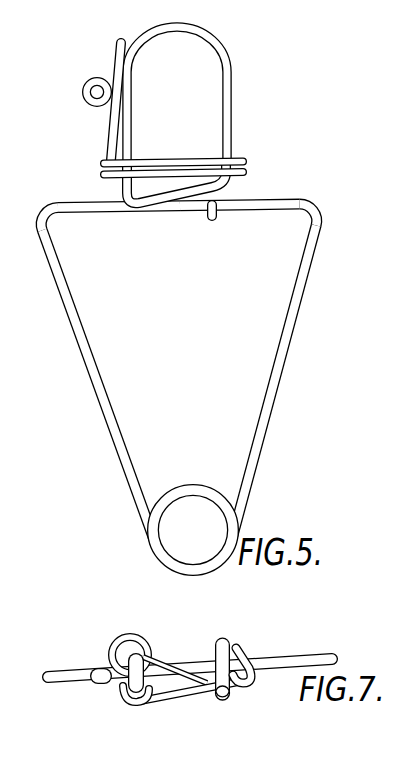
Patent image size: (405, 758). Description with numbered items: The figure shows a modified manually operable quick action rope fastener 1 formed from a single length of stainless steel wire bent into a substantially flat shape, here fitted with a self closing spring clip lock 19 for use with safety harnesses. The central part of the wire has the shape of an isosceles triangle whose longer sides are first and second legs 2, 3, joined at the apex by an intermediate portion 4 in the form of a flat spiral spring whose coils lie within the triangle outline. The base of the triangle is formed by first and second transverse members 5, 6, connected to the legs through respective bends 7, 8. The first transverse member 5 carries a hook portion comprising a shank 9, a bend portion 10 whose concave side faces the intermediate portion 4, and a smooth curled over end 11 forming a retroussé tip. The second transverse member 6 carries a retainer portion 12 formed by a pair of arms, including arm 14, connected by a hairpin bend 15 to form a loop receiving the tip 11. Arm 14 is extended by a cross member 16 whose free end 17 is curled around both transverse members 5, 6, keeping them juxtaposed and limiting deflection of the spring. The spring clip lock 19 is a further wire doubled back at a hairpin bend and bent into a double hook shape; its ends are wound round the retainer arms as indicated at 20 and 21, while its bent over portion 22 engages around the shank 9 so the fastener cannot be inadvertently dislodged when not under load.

In FIG. 5, the quick action rope fastener 1 is at (182, 365).
In FIG. 7, the quick action rope fastener 1 is at (184, 636).
In FIG. 5, the first leg 2 is at (62, 302).
In FIG. 5, the second leg 3 is at (300, 302).
In FIG. 5, the intermediate portion 4 is at (228, 540).
In FIG. 5, the first transverse member 5 is at (81, 205).
In FIG. 7, the first transverse member 5 is at (184, 636).
In FIG. 5, the second transverse member 6 is at (262, 203).
In FIG. 7, the second transverse member 6 is at (184, 636).
In FIG. 5, the bend 7 is at (48, 207).
In FIG. 7, the bend 7 is at (184, 644).
In FIG. 5, the bend 8 is at (320, 210).
In FIG. 7, the bend 8 is at (316, 654).
In FIG. 5, the shank 9 is at (193, 93).
In FIG. 7, the shank 9 is at (262, 655).
In FIG. 5, the bend portion 10 is at (193, 91).
In FIG. 7, the bend portion 10 is at (222, 639).
In FIG. 5, the curled over end 11 is at (82, 92).
In FIG. 7, the curled over end 11 is at (98, 670).
In FIG. 5, the retainer portion 12 is at (118, 92).
In FIG. 7, the retainer portion 12 is at (122, 693).
In FIG. 5, the arm 14 is at (131, 158).
In FIG. 5, the hairpin bend 15 is at (119, 42).
In FIG. 7, the hairpin bend 15 is at (150, 649).
In FIG. 5, the cross member 16 is at (161, 203).
In FIG. 7, the cross member 16 is at (198, 657).
In FIG. 5, the free end 17 is at (214, 221).
In FIG. 7, the free end 17 is at (228, 640).
In FIG. 5, the spring clip lock 19 is at (178, 149).
In FIG. 7, the spring clip lock 19 is at (124, 635).
In FIG. 5, the wound end of clip lock wire 20 is at (178, 149).
In FIG. 7, the wound end of clip lock wire 20 is at (132, 651).
In FIG. 5, the wound end of clip lock wire 21 is at (121, 190).
In FIG. 7, the wound end of clip lock wire 21 is at (187, 688).
In FIG. 5, the bent over portion 22 is at (248, 161).
In FIG. 7, the bent over portion 22 is at (242, 648).